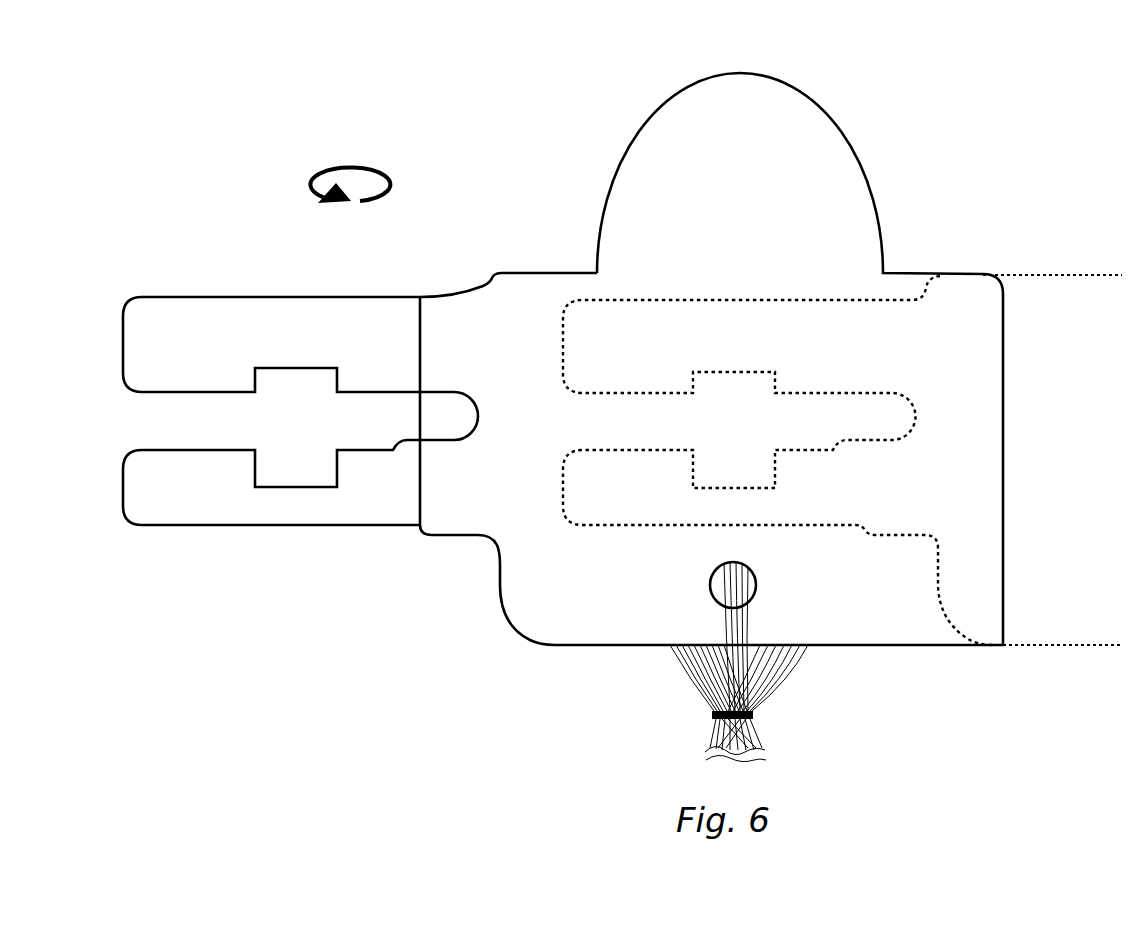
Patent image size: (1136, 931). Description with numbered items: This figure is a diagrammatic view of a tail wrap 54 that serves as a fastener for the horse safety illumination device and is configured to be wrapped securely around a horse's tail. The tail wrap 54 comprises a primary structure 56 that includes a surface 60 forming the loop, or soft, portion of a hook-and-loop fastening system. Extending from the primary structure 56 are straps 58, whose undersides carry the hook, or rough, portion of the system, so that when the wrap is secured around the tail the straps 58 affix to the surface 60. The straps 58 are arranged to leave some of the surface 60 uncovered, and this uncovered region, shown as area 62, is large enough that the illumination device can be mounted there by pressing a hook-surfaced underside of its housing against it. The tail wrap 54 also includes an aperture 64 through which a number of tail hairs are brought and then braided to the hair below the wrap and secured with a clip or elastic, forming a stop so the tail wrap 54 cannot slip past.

The tail wrap 54 is at (937, 170).
The primary structure 56 is at (555, 272).
The straps 58 is at (175, 297).
The surface 60 is at (493, 353).
The area 62 is at (733, 425).
The aperture 64 is at (710, 590).